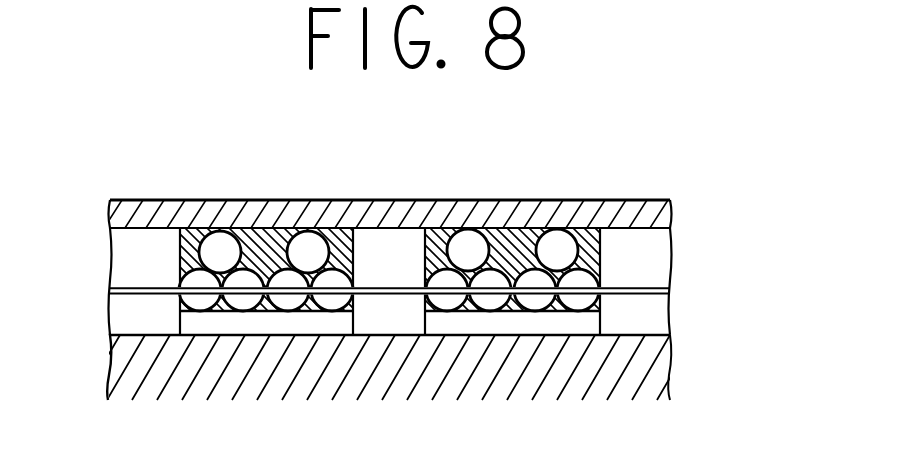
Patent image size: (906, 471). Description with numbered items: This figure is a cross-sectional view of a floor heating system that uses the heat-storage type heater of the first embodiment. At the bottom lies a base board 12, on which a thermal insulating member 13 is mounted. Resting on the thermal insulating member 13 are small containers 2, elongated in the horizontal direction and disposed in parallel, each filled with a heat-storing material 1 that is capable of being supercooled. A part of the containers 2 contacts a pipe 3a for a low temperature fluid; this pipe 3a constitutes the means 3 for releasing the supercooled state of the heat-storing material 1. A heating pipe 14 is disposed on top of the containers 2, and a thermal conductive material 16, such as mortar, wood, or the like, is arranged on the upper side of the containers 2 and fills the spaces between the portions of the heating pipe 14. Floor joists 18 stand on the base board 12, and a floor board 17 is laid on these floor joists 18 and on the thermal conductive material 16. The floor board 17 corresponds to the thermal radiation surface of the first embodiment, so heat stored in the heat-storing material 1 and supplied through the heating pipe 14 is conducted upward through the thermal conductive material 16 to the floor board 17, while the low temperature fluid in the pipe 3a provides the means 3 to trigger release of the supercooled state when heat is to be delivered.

The heat-storing material 1 is at (600, 277).
The small containers 2 is at (590, 227).
The means for releasing the supercooled state 3 is at (679, 279).
The pipe for a low temperature fluid 3a is at (670, 291).
The base board 12 is at (134, 335).
The thermal insulating member 13 is at (487, 322).
The heating pipe 14 is at (548, 242).
The thermal conductive material 16 is at (483, 236).
The floor board 17 is at (385, 212).
The floor joists 18 is at (380, 320).